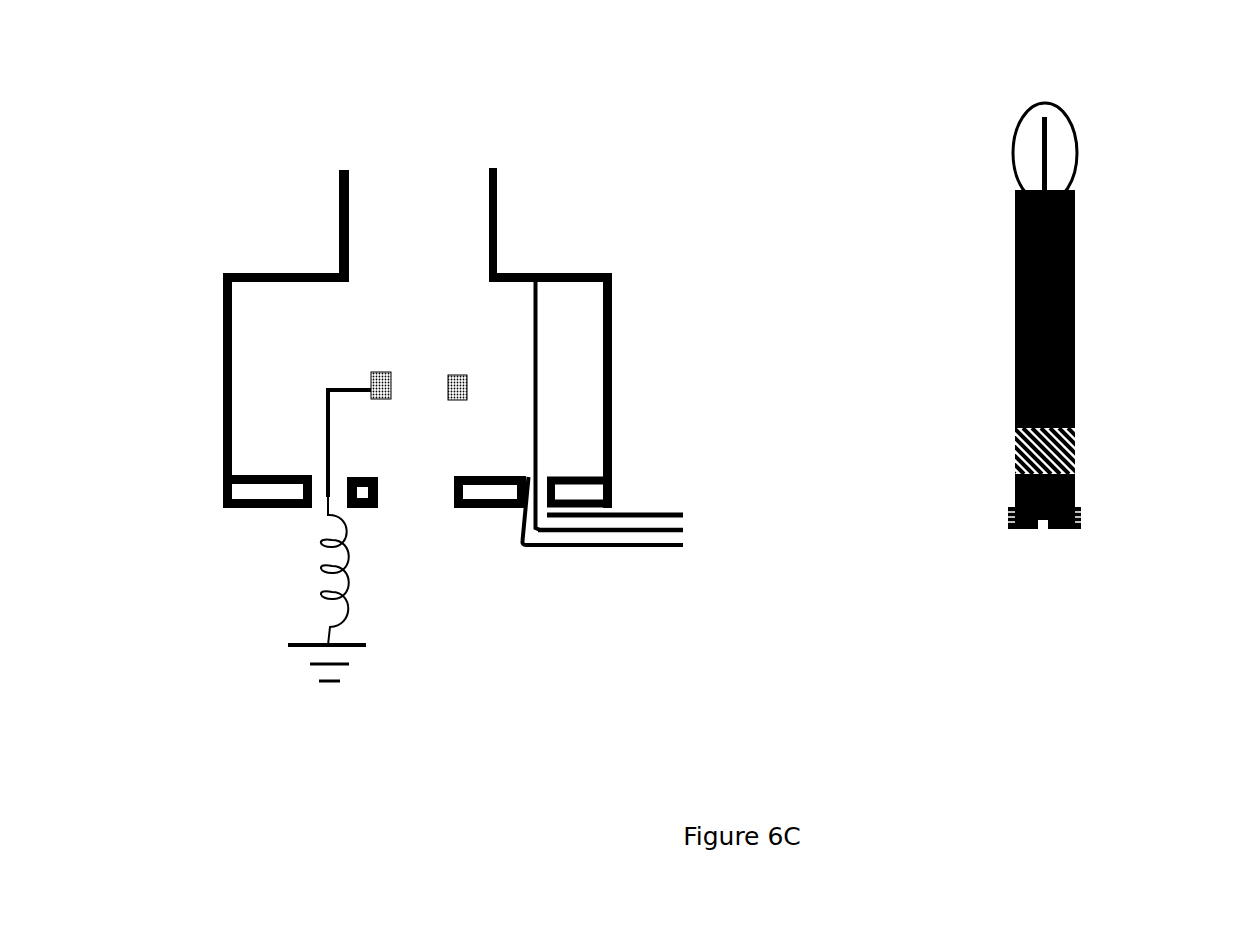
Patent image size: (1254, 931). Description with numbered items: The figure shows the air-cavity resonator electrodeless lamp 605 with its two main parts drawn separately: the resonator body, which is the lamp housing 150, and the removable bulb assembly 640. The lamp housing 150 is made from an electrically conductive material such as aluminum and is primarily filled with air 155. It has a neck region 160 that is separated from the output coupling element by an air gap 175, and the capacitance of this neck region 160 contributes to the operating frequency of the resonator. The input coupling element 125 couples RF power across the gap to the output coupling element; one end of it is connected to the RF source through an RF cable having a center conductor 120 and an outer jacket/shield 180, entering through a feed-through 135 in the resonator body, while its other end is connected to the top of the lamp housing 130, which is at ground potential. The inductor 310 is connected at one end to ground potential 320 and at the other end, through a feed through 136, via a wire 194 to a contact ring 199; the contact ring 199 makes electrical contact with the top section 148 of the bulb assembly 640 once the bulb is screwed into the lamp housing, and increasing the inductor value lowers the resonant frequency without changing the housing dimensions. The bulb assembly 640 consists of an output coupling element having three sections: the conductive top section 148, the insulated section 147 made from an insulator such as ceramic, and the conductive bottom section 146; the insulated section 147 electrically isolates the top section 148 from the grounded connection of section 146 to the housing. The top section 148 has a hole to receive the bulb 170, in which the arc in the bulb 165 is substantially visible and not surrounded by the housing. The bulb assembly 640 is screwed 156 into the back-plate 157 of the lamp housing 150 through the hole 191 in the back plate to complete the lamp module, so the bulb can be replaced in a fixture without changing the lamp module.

The air-cavity resonator electrodeless lamp 605 is at (331, 109).
The air gap 175 is at (360, 190).
The neck region 160 is at (345, 238).
The air 155 is at (287, 297).
The back-plate 157 is at (223, 495).
The feed through 136 is at (312, 505).
The contact ring 199 is at (371, 385).
The wire 194 is at (327, 418).
The inductor 310 is at (320, 597).
The ground potential 320 is at (305, 663).
The hole 191 is at (407, 500).
The lamp housing 150 is at (612, 300).
The input coupling element 125 is at (535, 343).
The top of the lamp housing 130 is at (535, 273).
The center conductor 120 is at (663, 536).
The feed-through 135 is at (518, 547).
The outer jacket/shield 180 is at (603, 548).
The bulb assembly 640 is at (986, 544).
The bulb 170 is at (1062, 110).
The arc in the bulb 165 is at (1047, 149).
The top section of the output coupling element 148 is at (1075, 294).
The insulated section 147 is at (1075, 454).
The bottom section of the output coupling element 146 is at (1075, 490).
The screw connection 156 is at (1050, 530).